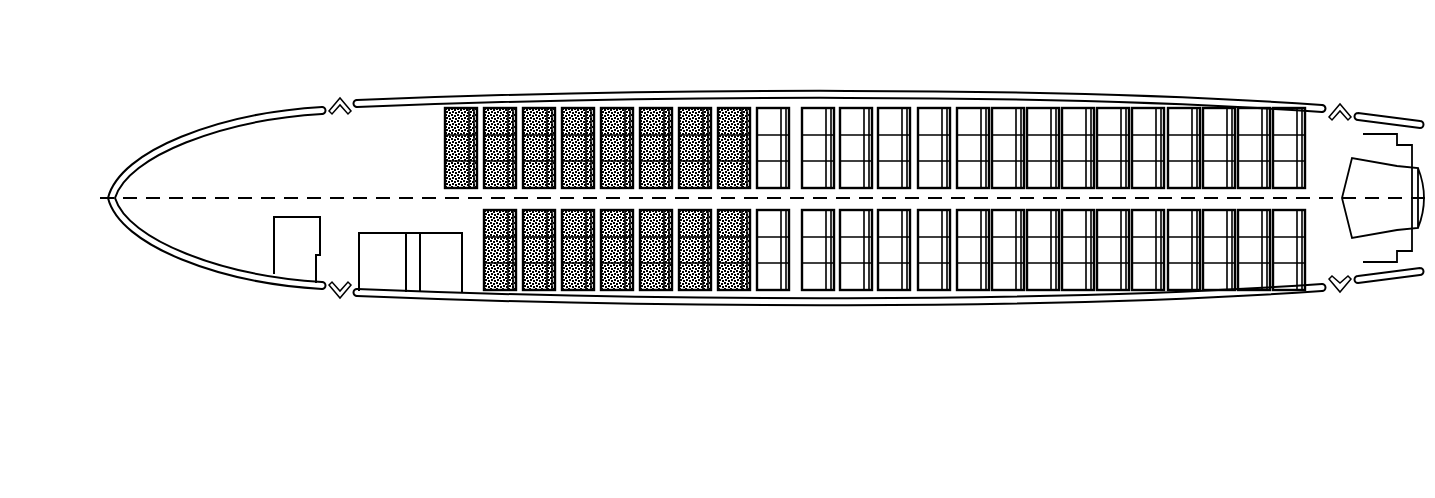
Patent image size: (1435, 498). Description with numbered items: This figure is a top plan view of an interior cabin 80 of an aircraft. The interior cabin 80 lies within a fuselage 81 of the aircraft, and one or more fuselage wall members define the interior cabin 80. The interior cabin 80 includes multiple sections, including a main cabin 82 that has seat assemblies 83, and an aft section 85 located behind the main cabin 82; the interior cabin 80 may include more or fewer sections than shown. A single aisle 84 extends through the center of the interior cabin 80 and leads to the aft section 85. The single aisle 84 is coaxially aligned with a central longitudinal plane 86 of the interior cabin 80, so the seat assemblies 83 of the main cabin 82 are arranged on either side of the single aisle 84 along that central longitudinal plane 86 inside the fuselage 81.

The interior cabin 80 is at (358, 38).
The fuselage 81 is at (563, 100).
The main cabin 82 is at (501, 114).
The seat assemblies 83 is at (770, 130).
The single aisle 84 is at (893, 193).
The aft section 85 is at (1324, 130).
The central longitudinal plane 86 is at (320, 198).